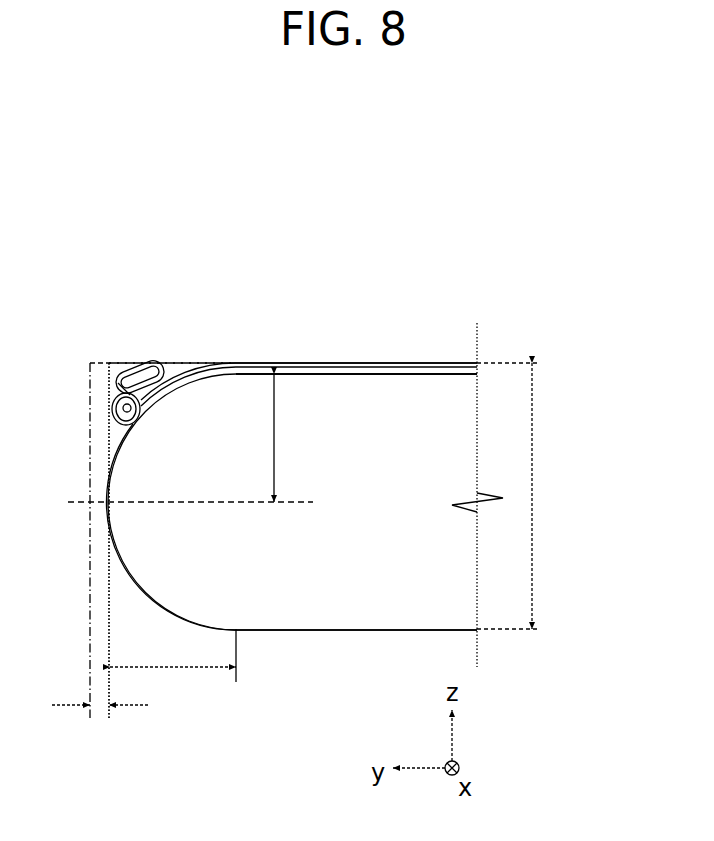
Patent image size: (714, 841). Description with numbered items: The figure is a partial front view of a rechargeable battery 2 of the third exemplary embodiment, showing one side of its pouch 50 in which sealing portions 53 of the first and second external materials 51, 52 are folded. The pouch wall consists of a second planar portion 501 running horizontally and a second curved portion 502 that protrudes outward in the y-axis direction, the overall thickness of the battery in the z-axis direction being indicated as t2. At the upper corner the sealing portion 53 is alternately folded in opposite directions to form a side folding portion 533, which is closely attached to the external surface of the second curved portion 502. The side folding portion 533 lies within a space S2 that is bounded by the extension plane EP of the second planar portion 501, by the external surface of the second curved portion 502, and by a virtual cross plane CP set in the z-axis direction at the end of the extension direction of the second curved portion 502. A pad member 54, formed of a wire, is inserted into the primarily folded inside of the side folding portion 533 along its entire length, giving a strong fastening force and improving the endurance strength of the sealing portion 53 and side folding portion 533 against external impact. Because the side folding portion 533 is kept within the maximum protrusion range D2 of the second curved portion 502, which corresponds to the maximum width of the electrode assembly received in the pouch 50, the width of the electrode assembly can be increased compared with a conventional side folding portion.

The rechargeable battery 2 is at (437, 258).
The pouch 50 is at (372, 296).
The first external material 51 is at (363, 373).
The second external material 52 is at (301, 365).
The sealing portion 53 is at (100, 400).
The side folding portion 533 is at (100, 363).
The pad member 54 is at (117, 421).
The second planar portion 501 is at (340, 605).
The second curved portion 502 is at (140, 587).
The space S2 is at (112, 386).
The extension plane EP is at (177, 362).
The virtual cross plane CP is at (110, 448).
The thickness of battery t2 is at (551, 496).
The maximum protrusion range D2 is at (173, 684).